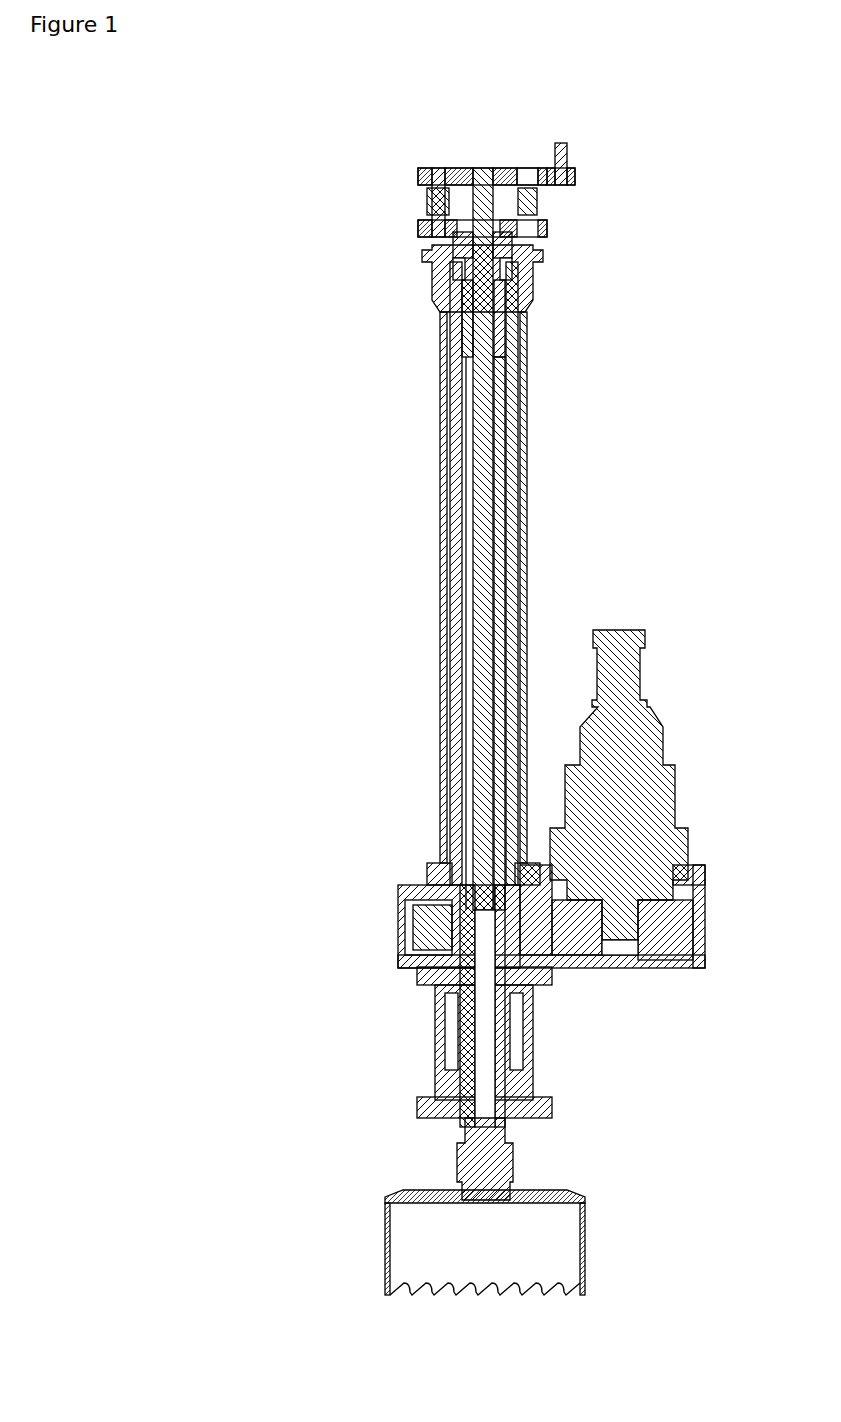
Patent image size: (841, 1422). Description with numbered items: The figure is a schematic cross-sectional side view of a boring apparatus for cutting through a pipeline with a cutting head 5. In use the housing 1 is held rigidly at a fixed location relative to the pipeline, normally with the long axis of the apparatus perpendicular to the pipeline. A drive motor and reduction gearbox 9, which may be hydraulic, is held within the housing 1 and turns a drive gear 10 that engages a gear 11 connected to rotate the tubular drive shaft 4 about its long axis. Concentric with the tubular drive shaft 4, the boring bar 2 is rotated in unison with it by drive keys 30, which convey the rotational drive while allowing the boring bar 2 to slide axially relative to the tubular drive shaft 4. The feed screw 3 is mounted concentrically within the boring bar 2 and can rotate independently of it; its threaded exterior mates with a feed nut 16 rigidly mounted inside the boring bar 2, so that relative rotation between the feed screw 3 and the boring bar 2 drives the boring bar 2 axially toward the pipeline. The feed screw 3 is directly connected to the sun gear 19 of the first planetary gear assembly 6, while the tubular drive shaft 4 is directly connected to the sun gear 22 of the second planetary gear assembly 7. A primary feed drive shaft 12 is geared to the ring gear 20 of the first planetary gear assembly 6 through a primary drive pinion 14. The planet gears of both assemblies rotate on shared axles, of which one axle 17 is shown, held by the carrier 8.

The housing 1 is at (527, 580).
The boring bar 2 is at (485, 1158).
The feed screw 3 is at (487, 497).
The tubular drive shaft 4 is at (452, 777).
The cutting head 5 is at (530, 1197).
The first planetary gear assembly 6 is at (413, 175).
The second planetary gear assembly 7 is at (413, 228).
The carrier 8 is at (425, 202).
The drive motor and reduction gearbox 9 is at (643, 752).
The drive gear 10 is at (588, 950).
The gear 11 is at (428, 932).
The primary feed drive shaft 12 is at (562, 150).
The primary drive pinion 14 is at (582, 175).
The feed nut 16 is at (465, 300).
The axle 17 is at (435, 167).
The sun gear 19 is at (462, 172).
The ring gear 20 is at (539, 167).
The sun gear 22 is at (453, 232).
The drive keys 30 is at (513, 327).